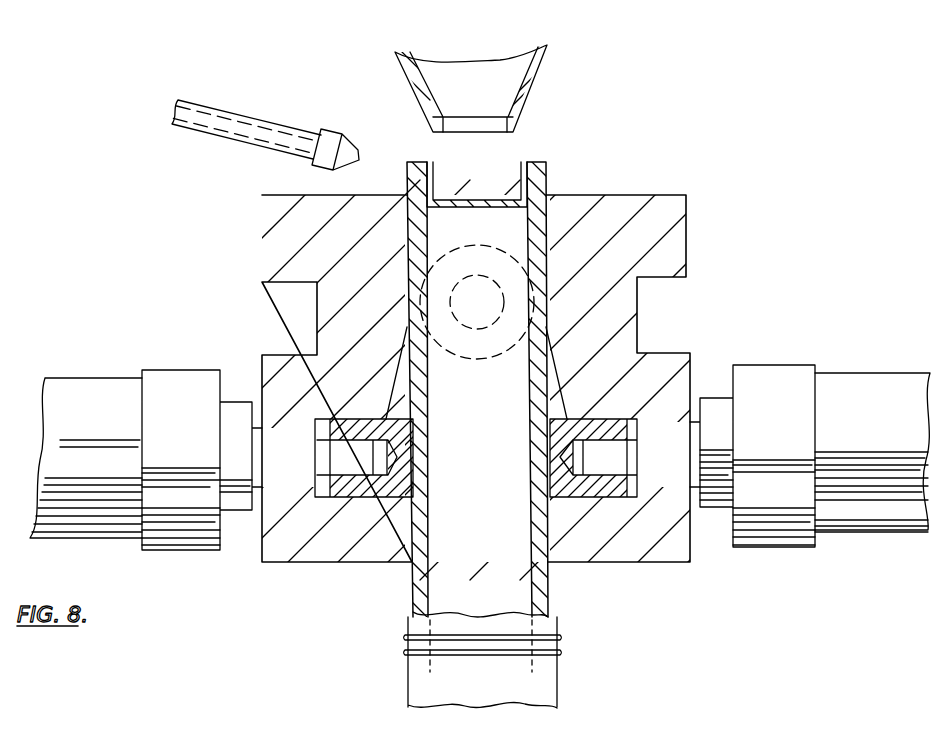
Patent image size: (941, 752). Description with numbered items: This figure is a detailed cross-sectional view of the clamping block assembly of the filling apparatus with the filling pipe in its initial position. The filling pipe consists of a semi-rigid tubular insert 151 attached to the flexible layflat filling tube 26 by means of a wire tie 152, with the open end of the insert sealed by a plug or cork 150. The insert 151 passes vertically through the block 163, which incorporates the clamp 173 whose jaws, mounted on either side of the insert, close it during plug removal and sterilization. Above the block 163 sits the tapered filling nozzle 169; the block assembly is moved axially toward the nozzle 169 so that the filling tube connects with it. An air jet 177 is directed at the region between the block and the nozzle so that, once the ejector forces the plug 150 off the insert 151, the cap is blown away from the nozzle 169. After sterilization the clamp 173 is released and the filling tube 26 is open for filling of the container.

The filling tube 26 is at (408, 683).
The plug 150 is at (420, 160).
The semi-rigid tubular insert 151 is at (413, 187).
The wire tie 152 is at (408, 638).
The block 163 is at (668, 240).
The filling nozzle 169 is at (405, 75).
The clamp 173 is at (557, 435).
The air jet 177 is at (245, 137).